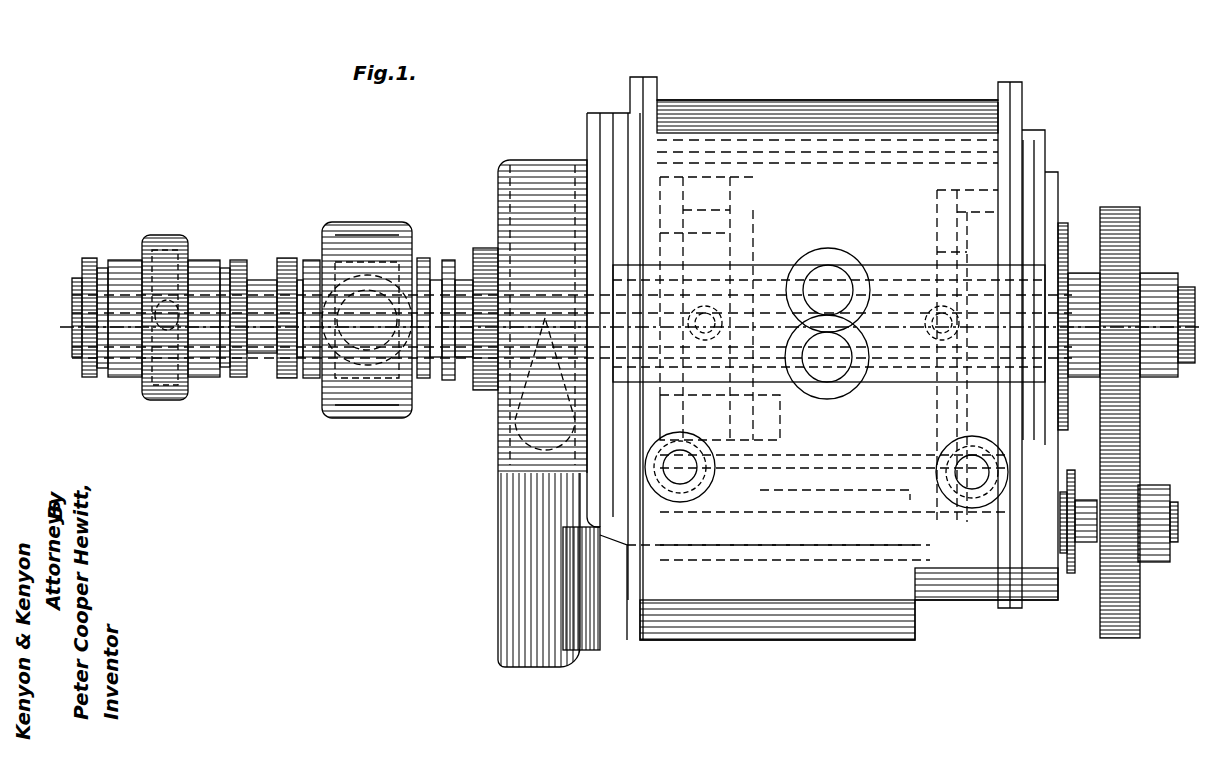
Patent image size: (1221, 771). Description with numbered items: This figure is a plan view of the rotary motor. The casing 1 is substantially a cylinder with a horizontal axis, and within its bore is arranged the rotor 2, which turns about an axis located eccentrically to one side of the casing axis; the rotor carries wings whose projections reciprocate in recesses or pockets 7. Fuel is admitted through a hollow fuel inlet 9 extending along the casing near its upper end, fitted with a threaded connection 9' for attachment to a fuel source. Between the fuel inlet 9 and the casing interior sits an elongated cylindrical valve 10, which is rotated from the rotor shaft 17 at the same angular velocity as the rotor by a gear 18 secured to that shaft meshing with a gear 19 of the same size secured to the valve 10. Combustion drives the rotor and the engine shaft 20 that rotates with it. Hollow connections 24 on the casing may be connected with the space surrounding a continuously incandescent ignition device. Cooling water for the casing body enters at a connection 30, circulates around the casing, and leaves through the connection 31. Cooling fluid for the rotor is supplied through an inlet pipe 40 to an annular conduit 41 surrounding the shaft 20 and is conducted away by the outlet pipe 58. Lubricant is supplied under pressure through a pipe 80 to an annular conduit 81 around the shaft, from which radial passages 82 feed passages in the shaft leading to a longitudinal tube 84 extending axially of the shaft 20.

The casing 1 is at (838, 118).
The rotor 2 is at (72, 313).
The recesses or pockets 7 is at (670, 83).
The fuel inlet 9 is at (755, 629).
The threaded connection 9' is at (565, 620).
The valve 10 is at (1090, 542).
The rotor shaft 17 is at (1184, 290).
The gear 18 is at (1112, 215).
The gear 19 is at (1110, 628).
The engine shaft 20 is at (265, 355).
The hollow connections 24 is at (697, 488).
The connection 30 is at (840, 252).
The connection 31 is at (838, 375).
The inlet pipe 40 is at (380, 290).
The annular conduit 41 is at (362, 232).
The outlet pipe 58 is at (522, 568).
The lubricant pipe 80 is at (158, 330).
The annular conduit 81 is at (165, 248).
The radial passages 82 is at (185, 262).
The longitudinal tube 84 is at (206, 340).